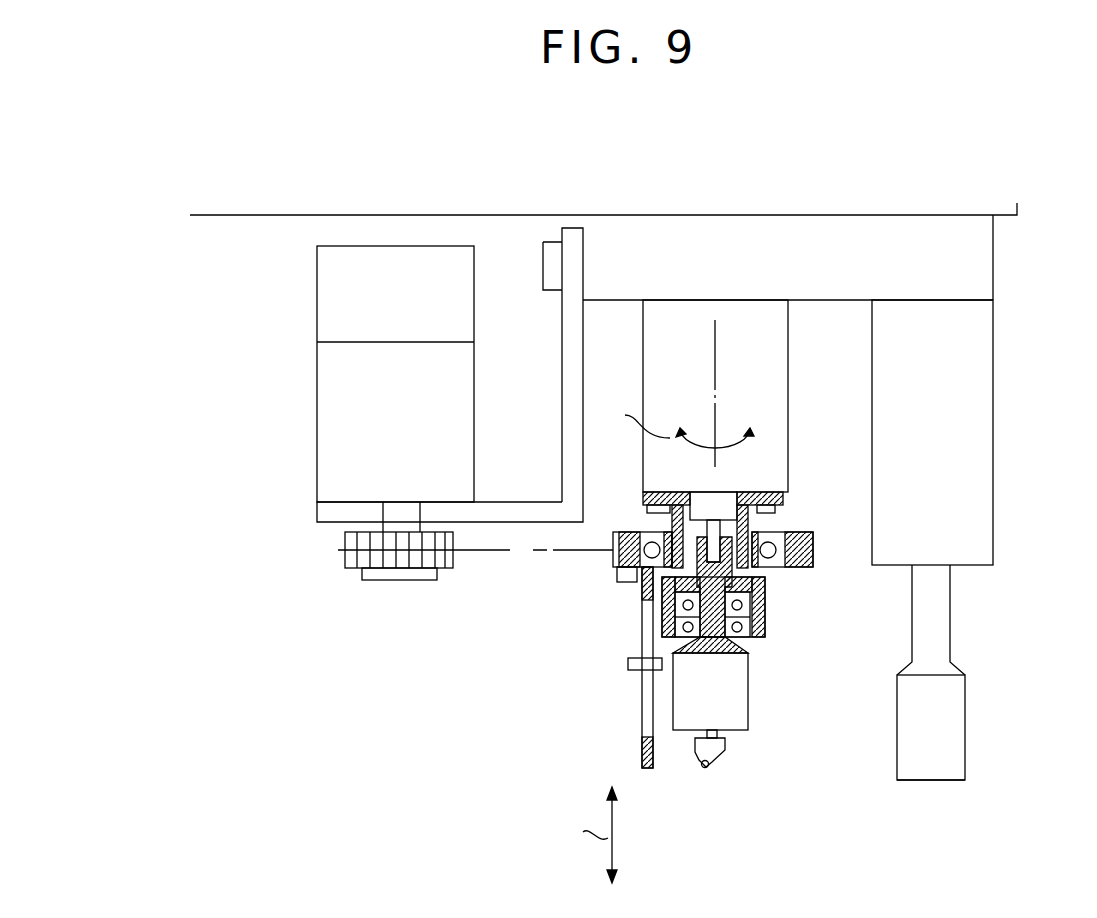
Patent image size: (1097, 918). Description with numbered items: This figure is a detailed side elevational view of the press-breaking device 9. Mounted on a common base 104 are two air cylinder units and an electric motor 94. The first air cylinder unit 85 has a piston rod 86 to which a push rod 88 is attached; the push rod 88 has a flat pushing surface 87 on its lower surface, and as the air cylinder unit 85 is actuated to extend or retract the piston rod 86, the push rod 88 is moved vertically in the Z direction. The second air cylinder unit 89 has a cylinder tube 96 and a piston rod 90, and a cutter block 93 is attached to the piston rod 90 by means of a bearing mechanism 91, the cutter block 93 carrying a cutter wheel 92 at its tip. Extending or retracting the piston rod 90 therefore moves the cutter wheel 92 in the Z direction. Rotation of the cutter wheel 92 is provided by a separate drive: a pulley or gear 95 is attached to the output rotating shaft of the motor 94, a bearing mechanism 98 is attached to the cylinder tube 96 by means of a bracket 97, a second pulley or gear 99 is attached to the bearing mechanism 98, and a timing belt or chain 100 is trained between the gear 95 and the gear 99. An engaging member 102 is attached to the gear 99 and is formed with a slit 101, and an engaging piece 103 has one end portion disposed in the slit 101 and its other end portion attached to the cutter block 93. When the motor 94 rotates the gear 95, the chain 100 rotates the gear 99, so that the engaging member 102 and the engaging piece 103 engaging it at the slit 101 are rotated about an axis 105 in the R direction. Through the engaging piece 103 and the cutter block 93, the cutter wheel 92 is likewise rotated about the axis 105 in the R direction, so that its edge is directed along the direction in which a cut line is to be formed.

The press-breaking device 9 is at (631, 543).
The air cylinder unit 85 is at (993, 370).
The piston rod 86 is at (950, 595).
The flat pushing surface 87 is at (930, 780).
The push rod 88 is at (952, 712).
The air cylinder unit 89 is at (775, 347).
The piston rod 90 is at (722, 510).
The bearing mechanism 91 is at (743, 640).
The cutter wheel 92 is at (705, 770).
The cutter block 93 is at (738, 720).
The electric motor 94 is at (335, 318).
The pulley or gear 95 is at (352, 570).
The cylinder tube 96 is at (775, 443).
The bracket 97 is at (767, 567).
The bearing mechanism 98 is at (650, 548).
The pulley or gear 99 is at (813, 552).
The timing belt or chain 100 is at (513, 550).
The slit 101 is at (640, 725).
The engaging member 102 is at (645, 615).
The engaging piece 103 is at (628, 665).
The base 104 is at (993, 258).
The axis 105 is at (720, 420).